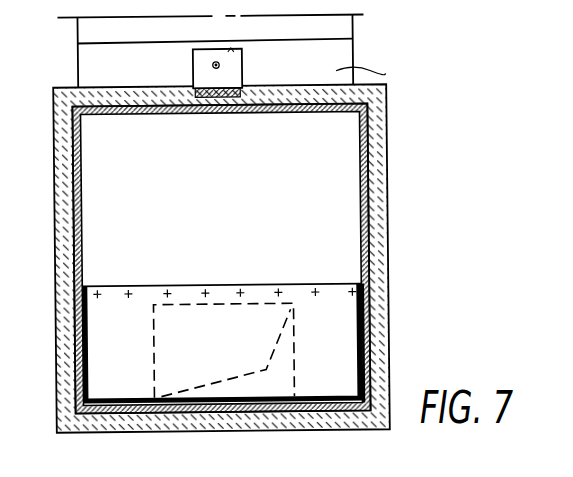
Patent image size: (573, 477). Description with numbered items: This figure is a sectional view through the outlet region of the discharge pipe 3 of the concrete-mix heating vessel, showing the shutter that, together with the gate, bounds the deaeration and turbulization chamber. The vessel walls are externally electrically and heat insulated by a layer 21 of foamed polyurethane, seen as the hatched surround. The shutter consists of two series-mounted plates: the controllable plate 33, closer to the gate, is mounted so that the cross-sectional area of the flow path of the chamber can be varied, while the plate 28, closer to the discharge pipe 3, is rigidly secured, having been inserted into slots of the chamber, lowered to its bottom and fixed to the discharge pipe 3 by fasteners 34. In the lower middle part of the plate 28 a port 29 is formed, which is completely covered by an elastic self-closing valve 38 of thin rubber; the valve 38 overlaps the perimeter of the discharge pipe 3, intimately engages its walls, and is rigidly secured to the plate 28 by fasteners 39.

The layer of foamed polyurethane 21 is at (63, 157).
The plate 28 is at (343, 130).
The fasteners 34 is at (195, 70).
The controllable plate 33 is at (355, 20).
The discharge pipe 3 is at (81, 354).
The elastic self-closing valve 38 is at (340, 321).
The fasteners 39 is at (130, 300).
The port 29 is at (280, 378).